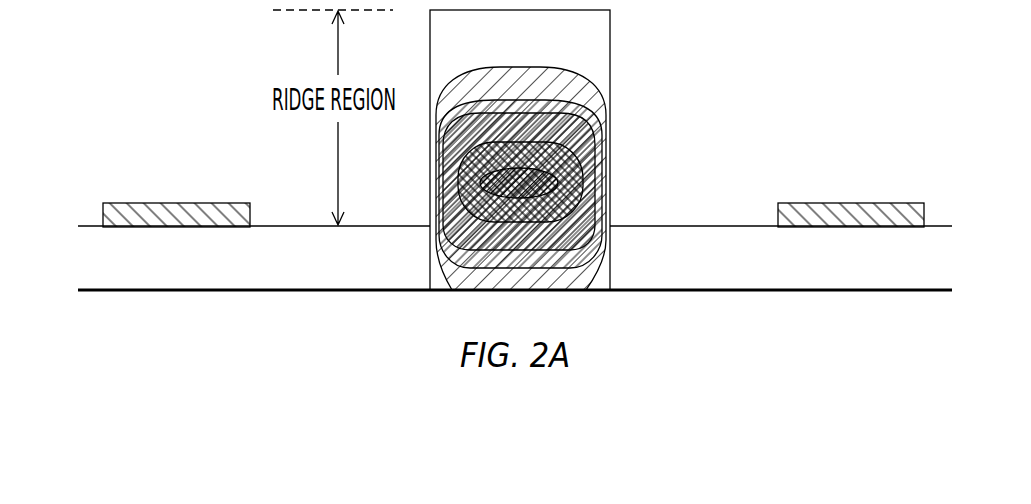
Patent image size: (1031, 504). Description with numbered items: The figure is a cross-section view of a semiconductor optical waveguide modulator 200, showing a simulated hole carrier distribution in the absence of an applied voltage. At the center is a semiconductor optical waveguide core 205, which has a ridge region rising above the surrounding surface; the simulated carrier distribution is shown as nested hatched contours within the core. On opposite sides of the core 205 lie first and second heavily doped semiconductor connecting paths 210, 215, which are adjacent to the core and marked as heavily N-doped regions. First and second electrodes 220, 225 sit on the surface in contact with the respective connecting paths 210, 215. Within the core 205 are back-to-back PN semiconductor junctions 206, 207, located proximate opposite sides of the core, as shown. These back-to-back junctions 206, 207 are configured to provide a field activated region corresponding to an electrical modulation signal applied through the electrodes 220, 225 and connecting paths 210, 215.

The semiconductor optical waveguide modulator 200 is at (898, 38).
The semiconductor optical waveguide core 205 is at (611, 188).
The PN semiconductor junction 206 is at (430, 265).
The PN semiconductor junction 207 is at (611, 263).
The first heavily doped semiconductor connecting path 210 is at (291, 223).
The second heavily doped semiconductor connecting path 215 is at (739, 224).
The first electrode 220 is at (178, 200).
The second electrode 225 is at (852, 202).